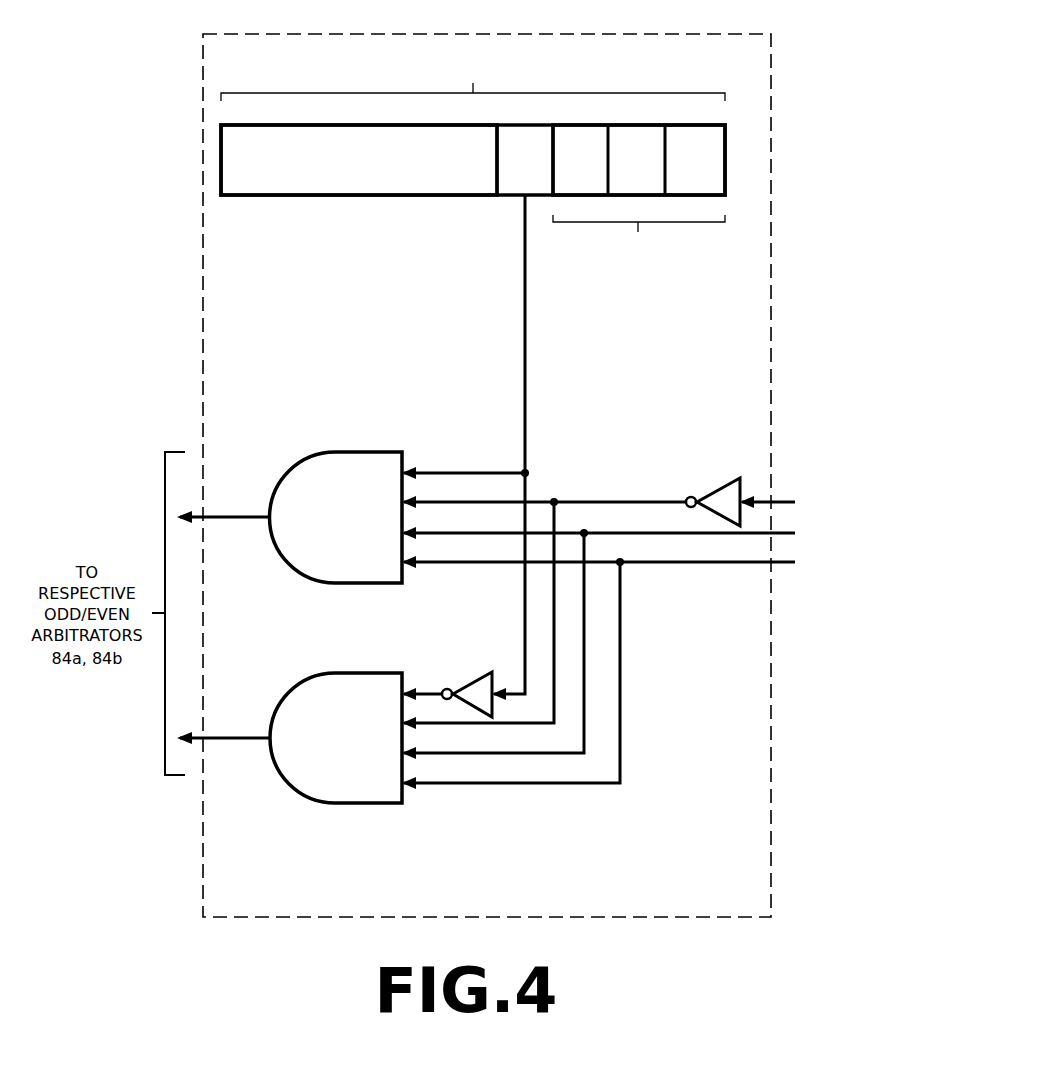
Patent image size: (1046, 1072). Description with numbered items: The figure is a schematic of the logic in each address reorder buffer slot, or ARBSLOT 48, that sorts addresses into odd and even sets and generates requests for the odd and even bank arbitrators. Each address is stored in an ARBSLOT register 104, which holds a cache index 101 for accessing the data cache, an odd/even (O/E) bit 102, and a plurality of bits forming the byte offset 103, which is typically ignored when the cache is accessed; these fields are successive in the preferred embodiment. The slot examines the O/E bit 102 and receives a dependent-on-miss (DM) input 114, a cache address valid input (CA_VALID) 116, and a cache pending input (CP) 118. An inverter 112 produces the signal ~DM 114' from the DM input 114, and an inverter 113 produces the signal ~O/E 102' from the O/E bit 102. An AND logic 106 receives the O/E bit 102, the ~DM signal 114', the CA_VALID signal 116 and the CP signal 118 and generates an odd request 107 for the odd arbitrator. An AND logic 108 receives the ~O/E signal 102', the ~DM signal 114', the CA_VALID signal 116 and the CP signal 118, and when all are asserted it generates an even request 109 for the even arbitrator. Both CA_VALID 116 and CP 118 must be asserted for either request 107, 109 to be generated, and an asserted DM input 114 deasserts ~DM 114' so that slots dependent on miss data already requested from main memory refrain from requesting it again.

The ARBSLOT 48 is at (745, 736).
The cache index 101 is at (303, 196).
The odd/even (O/E) bit 102 is at (477, 412).
The ~O/E signal 102' is at (408, 662).
The byte offset 103 is at (639, 216).
The ARBSLOT register 104 is at (740, 154).
The AND logic 106 is at (302, 583).
The odd request 107 is at (228, 520).
The AND logic 108 is at (303, 803).
The even request 109 is at (228, 741).
The inverter 112 is at (720, 478).
The inverter 113 is at (494, 672).
The dependent-on-miss (DM) input 114 is at (816, 463).
The ~DM signal 114' is at (544, 584).
The cache address valid input (CA_VALID) 116 is at (661, 533).
The cache pending input (CP) 118 is at (701, 562).